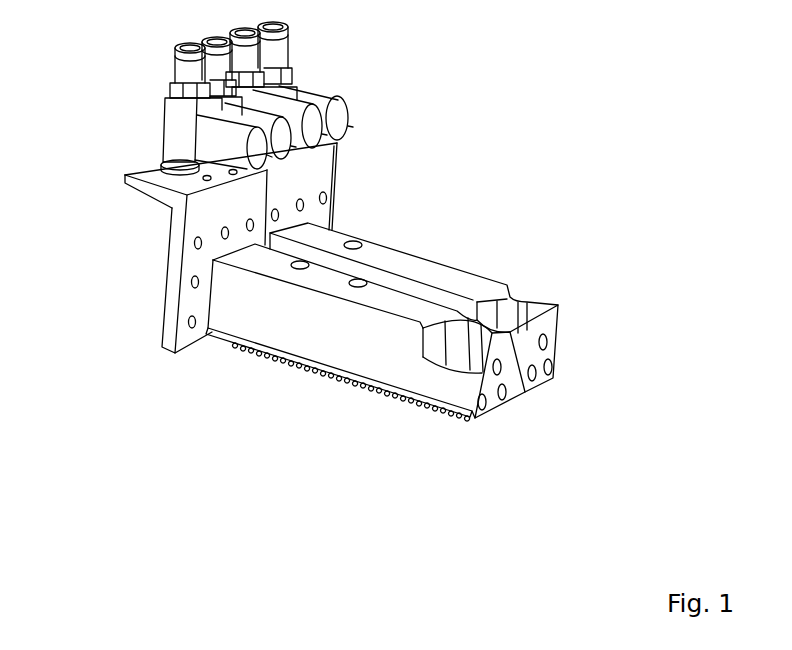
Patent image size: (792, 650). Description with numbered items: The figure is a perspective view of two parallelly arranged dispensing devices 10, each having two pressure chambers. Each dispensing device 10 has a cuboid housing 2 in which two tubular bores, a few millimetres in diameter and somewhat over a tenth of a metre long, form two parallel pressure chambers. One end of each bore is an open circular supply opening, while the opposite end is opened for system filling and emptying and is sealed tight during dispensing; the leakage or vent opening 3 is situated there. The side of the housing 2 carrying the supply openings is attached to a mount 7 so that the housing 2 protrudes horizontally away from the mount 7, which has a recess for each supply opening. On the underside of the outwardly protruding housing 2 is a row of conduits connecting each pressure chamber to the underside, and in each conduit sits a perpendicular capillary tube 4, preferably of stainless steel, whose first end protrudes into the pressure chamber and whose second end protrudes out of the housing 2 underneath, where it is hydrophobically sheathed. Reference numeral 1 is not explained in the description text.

The pneumatic fitting / valve 1 is at (178, 134).
The housing 2 is at (290, 330).
The leakage or vent opening 3 is at (510, 393).
The capillary tube 4 is at (348, 387).
The mount 7 is at (217, 215).
The dispensing device 10 is at (460, 147).